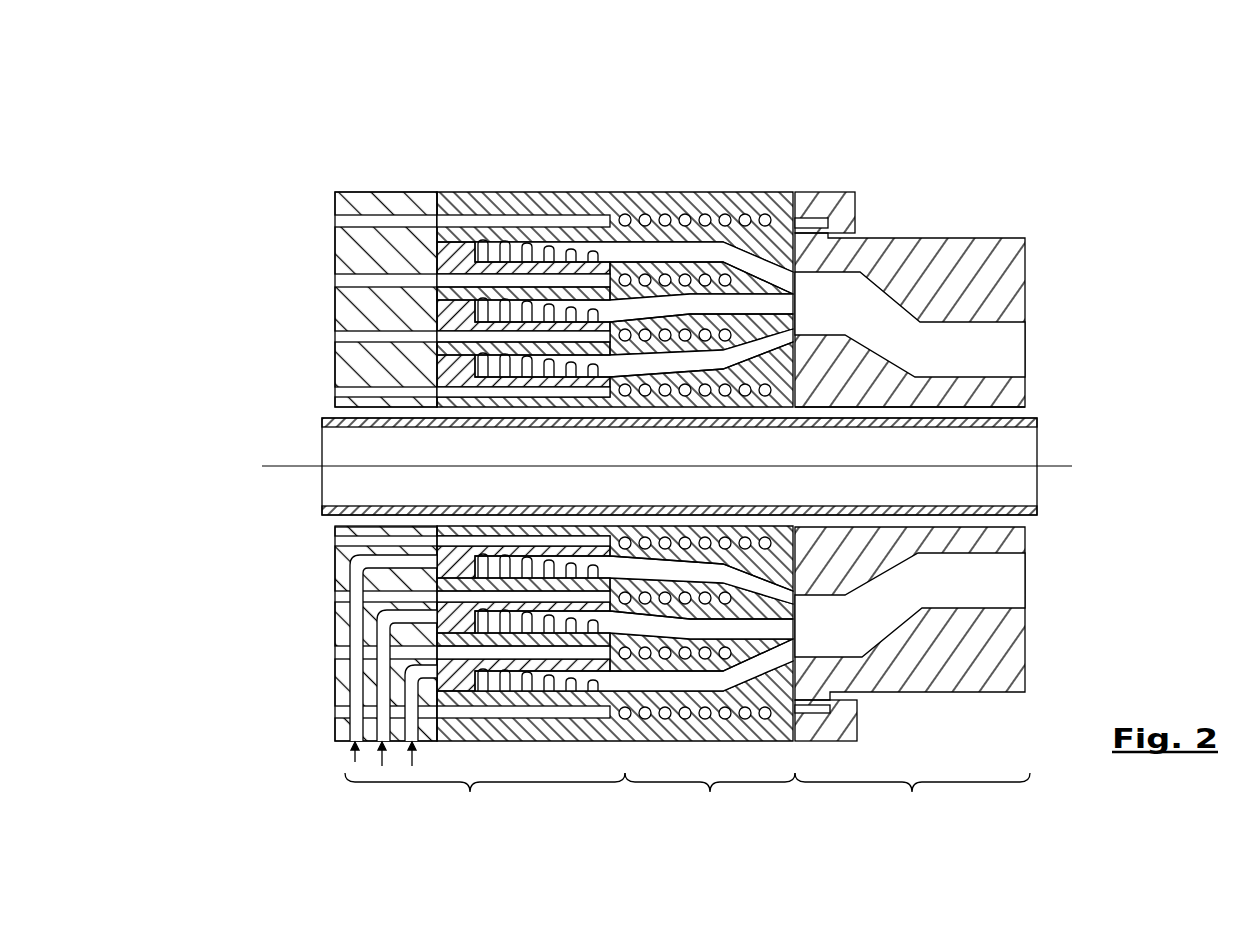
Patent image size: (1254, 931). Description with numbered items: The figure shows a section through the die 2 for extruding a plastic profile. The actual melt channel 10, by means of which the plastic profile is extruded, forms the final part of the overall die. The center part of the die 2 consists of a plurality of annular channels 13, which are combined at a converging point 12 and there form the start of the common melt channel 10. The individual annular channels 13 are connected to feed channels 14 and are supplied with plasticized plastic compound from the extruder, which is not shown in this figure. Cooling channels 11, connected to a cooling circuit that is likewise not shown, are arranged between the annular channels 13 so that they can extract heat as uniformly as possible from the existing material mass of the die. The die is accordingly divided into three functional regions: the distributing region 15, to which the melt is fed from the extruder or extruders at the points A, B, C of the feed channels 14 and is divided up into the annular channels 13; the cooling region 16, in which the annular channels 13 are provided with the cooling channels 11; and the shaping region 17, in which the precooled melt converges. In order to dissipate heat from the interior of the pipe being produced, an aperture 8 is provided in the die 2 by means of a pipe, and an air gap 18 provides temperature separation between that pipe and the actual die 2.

The die 2 is at (670, 130).
The aperture 8 is at (1030, 485).
The melt channel 10 is at (1003, 413).
The cooling channel 11 is at (650, 212).
The converging point 12 is at (805, 308).
The annular channel 13 is at (678, 570).
The feed channel 14 is at (410, 557).
The distributing region 15 is at (485, 808).
The cooling region 16 is at (710, 808).
The shaping region 17 is at (912, 808).
The air gap 18 is at (992, 410).
The feed point A is at (355, 762).
The feed point B is at (382, 766).
The feed point C is at (412, 766).